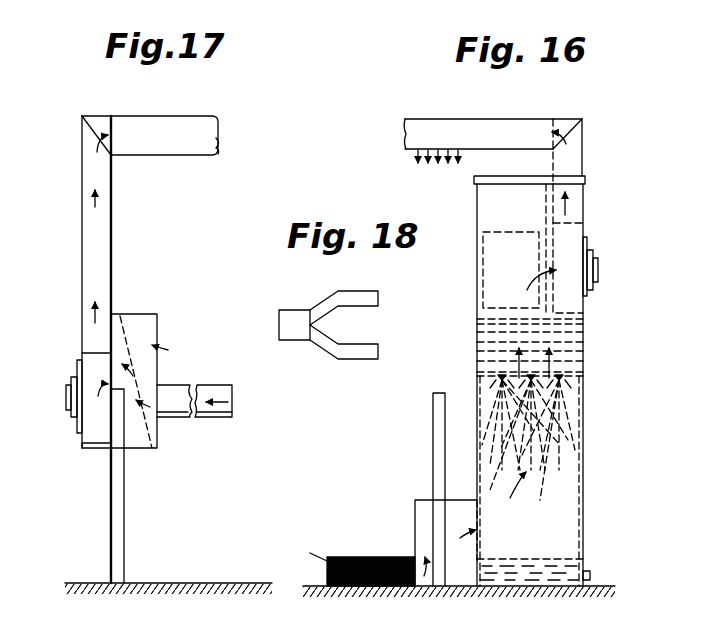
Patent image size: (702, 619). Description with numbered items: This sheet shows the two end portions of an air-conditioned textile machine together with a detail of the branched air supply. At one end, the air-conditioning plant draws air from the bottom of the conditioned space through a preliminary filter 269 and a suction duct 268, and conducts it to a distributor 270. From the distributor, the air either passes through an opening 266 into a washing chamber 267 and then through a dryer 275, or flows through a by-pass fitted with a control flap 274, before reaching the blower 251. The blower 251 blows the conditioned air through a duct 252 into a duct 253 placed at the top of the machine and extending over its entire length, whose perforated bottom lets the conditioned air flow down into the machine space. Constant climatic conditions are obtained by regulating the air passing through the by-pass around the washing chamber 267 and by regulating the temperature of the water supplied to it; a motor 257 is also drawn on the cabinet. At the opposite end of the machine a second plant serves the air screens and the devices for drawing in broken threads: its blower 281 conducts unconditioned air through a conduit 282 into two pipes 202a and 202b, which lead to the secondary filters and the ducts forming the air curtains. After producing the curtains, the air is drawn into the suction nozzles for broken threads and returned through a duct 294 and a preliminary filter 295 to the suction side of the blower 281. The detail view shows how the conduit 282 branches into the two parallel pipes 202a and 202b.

In FIG. 18, the pipe 202a is at (362, 294).
In FIG. 17, the pipe 202b is at (186, 122).
In FIG. 18, the pipe 202b is at (358, 356).
In FIG. 17, the conduit 282 is at (87, 256).
In FIG. 18, the conduit 282 is at (293, 313).
In FIG. 17, the preliminary filter 295 is at (150, 354).
In FIG. 17, the duct 294 is at (229, 388).
In FIG. 17, the blower 281 is at (78, 400).
In FIG. 16, the duct 253 is at (526, 123).
In FIG. 16, the duct 252 is at (578, 158).
In FIG. 16, the blower 251 is at (532, 381).
In FIG. 16, the control flap 274 is at (509, 232).
In FIG. 16, the fan motor 257 is at (582, 300).
In FIG. 16, the dryer 275 is at (570, 342).
In FIG. 16, the washing chamber 267 is at (552, 430).
In FIG. 16, the distributor 270 is at (417, 515).
In FIG. 16, the opening 266 is at (463, 537).
In FIG. 16, the suction duct 268 is at (363, 557).
In FIG. 16, the preliminary filter 269 is at (327, 568).